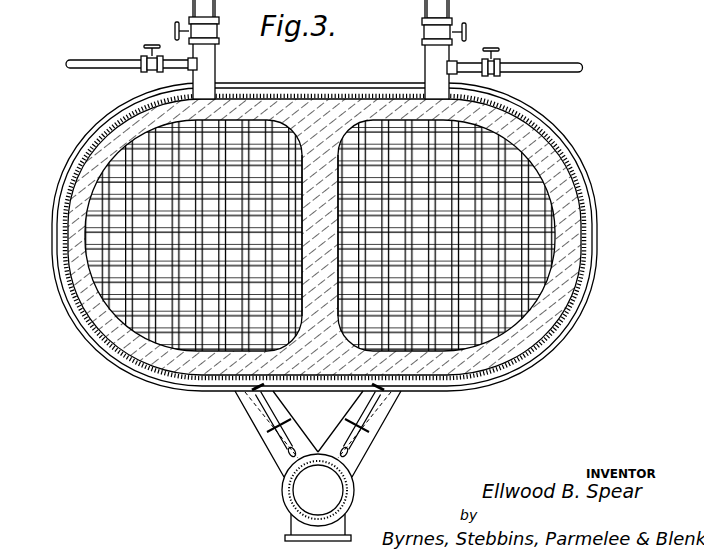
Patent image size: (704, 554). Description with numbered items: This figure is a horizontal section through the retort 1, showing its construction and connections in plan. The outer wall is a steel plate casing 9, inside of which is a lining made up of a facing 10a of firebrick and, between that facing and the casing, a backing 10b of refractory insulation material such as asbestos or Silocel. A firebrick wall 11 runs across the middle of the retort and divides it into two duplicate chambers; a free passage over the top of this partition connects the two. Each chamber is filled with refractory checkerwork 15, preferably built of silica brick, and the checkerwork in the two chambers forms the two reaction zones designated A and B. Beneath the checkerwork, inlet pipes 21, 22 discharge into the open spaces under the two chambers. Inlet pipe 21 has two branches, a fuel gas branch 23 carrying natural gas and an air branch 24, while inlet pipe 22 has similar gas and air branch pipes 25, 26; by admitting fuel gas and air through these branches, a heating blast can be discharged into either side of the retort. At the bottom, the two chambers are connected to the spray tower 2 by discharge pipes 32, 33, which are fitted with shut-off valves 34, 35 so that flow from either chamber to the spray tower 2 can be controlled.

The retort 1 is at (62, 158).
The steel plate casing 9 is at (57, 203).
The facing of firebrick 10a is at (78, 254).
The backing of refractory insulation material 10b is at (64, 229).
The firebrick wall 11 is at (322, 165).
The refractory checkerwork 15 is at (147, 165).
The checkerwork reaction zone A is at (138, 281).
The checkerwork reaction zone B is at (522, 303).
The inlet pipe 21 is at (216, 73).
The inlet pipe 22 is at (424, 72).
The fuel gas branch 23 is at (95, 66).
The air branch 24 is at (218, 11).
The gas branch pipe 25 is at (544, 68).
The air branch pipe 26 is at (425, 11).
The discharge pipe 32 is at (258, 414).
The discharge pipe 33 is at (383, 413).
The shut-off valve 34 is at (268, 441).
The shut-off valve 35 is at (366, 431).
The spray tower 2 is at (287, 498).